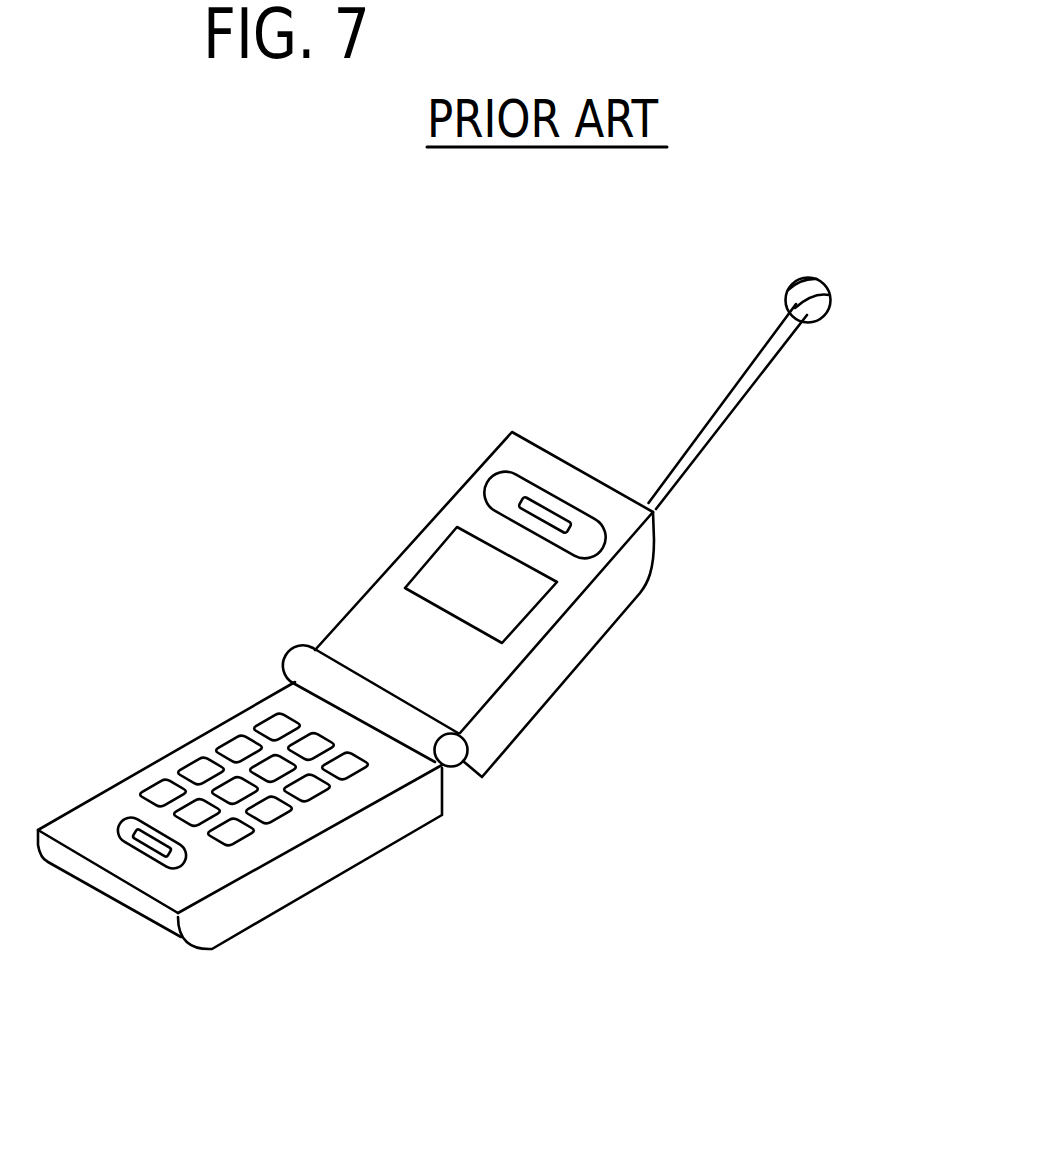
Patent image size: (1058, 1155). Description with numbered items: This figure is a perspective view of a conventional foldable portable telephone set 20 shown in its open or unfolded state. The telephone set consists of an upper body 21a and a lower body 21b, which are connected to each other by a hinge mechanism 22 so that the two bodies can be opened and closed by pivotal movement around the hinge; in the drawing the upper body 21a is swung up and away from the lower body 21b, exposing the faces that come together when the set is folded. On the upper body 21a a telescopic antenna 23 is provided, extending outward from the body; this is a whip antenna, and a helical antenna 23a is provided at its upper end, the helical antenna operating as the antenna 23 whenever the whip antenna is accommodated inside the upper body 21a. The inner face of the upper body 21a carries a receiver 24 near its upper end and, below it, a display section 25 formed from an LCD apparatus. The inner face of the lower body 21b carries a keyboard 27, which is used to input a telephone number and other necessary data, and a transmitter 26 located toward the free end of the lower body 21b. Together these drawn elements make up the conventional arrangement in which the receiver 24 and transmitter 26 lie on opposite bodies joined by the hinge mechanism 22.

The foldable portable telephone set 20 is at (383, 387).
The upper body 21a is at (562, 655).
The lower body 21b is at (348, 850).
The hinge mechanism 22 is at (447, 753).
The telescopic antenna 23 is at (722, 425).
The helical antenna 23a is at (831, 300).
The receiver 24 is at (507, 470).
The display section 25 is at (440, 557).
The transmitter 26 is at (188, 857).
The keyboard 27 is at (203, 742).